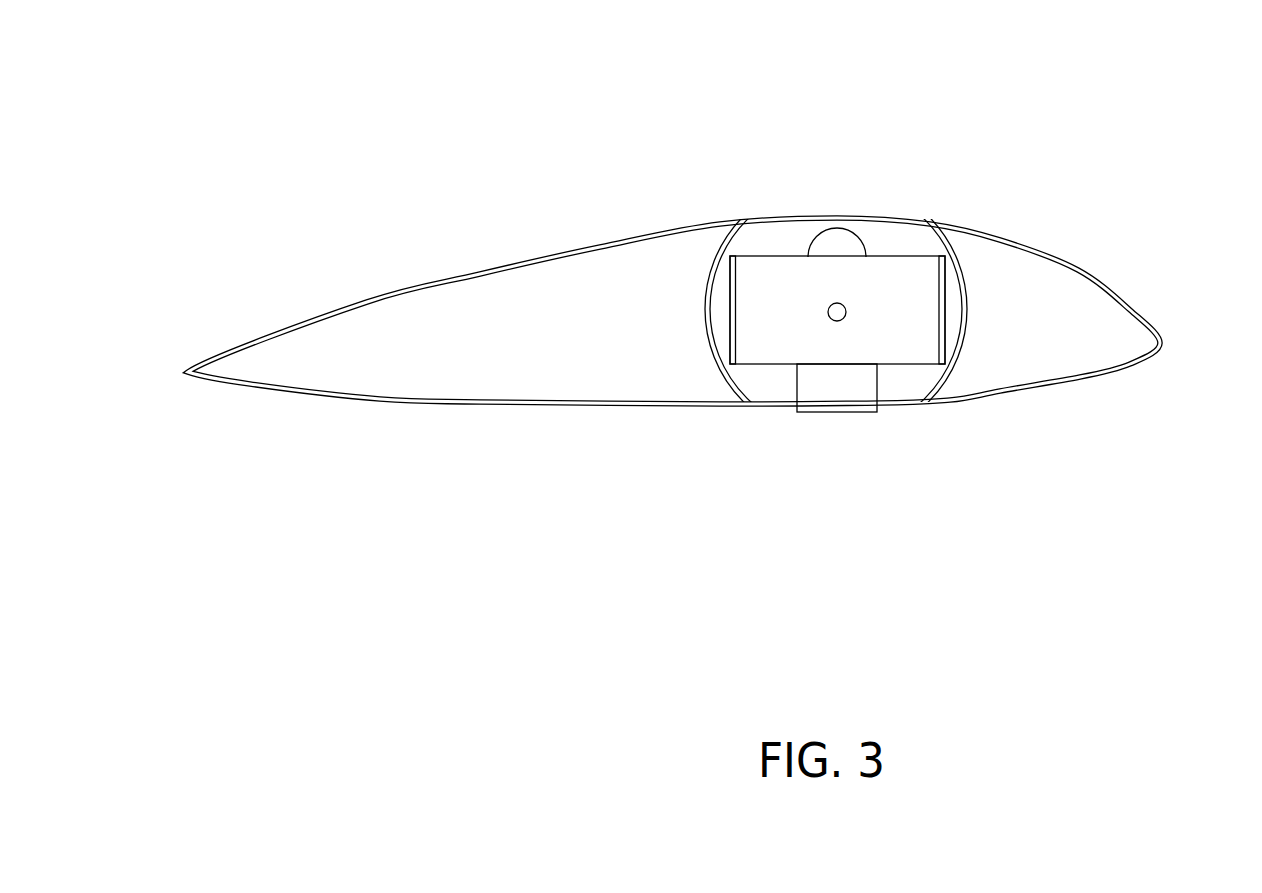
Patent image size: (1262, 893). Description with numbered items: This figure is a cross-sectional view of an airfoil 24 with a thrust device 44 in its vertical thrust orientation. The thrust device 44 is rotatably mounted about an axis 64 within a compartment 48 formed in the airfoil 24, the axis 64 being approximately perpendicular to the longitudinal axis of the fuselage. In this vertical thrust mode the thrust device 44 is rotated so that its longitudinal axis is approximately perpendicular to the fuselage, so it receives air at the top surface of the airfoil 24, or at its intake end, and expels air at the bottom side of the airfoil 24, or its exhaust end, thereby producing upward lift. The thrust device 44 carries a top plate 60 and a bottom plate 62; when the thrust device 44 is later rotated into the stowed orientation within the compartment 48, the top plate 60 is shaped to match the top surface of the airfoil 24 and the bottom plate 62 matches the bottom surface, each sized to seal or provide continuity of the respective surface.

The airfoil 24 is at (1078, 268).
The thrust device 44 is at (880, 272).
The compartment 48 is at (905, 382).
The top plate 60 is at (727, 285).
The bottom plate 62 is at (943, 340).
The axis 64 is at (830, 320).